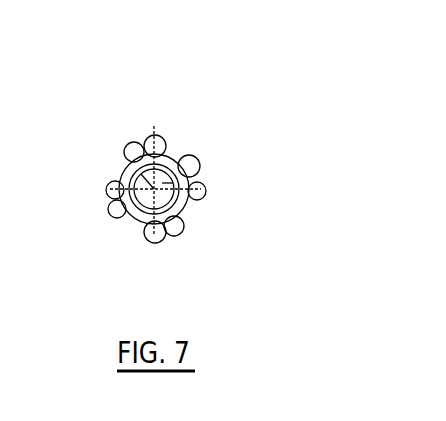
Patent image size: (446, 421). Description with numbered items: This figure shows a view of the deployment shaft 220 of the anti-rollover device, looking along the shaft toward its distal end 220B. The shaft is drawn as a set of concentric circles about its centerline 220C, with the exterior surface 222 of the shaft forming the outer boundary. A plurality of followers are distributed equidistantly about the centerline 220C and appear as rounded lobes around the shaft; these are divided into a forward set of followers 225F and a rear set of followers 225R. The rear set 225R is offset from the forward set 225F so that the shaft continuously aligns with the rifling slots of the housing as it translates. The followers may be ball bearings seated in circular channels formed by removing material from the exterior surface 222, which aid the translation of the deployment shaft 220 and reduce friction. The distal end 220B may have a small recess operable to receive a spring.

The deployment shaft 220 is at (250, 120).
The distal end 220B is at (164, 188).
The centerline 220C is at (133, 176).
The exterior surface 222 is at (173, 158).
The forward set of followers 225F is at (157, 140).
The rear set of followers 225R is at (122, 215).